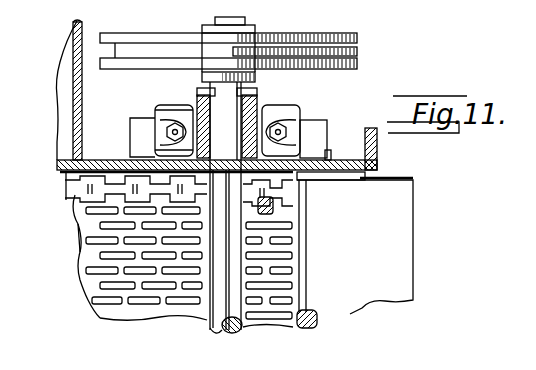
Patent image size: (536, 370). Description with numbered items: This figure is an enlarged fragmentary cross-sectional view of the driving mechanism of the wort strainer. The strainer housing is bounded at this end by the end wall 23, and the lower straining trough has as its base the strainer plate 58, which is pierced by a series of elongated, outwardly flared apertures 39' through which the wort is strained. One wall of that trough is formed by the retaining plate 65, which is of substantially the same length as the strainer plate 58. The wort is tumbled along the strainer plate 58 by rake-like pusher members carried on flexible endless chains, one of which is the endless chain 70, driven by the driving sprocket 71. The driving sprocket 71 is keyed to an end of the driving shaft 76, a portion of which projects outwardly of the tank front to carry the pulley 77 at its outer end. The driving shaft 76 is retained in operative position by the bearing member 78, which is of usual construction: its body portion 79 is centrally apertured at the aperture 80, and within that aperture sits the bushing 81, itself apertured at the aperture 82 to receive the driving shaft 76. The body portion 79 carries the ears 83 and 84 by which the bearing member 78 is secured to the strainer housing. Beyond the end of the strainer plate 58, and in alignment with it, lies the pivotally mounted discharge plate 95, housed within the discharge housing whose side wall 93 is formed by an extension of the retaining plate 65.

The pulley 77 is at (329, 46).
The end wall 23 is at (83, 99).
The bushing 81 is at (203, 96).
The body portion 79 is at (188, 107).
The ear 84 is at (130, 122).
The aperture 80 is at (157, 143).
The aperture 82 is at (252, 99).
The bearing member 78 is at (270, 110).
The ear 83 is at (301, 116).
The side wall 93 is at (343, 161).
The retaining plate 65 is at (60, 160).
The endless chain 70 is at (65, 185).
The aperture 39' is at (60, 238).
The strainer plate 58 is at (87, 290).
The driving sprocket 71 is at (262, 213).
The driving shaft 76 is at (228, 228).
The discharge plate 95 is at (400, 222).